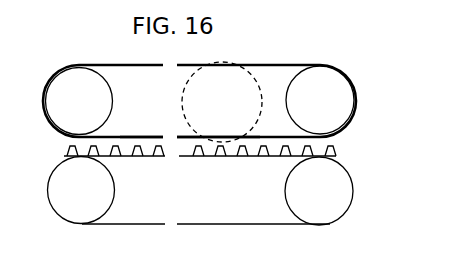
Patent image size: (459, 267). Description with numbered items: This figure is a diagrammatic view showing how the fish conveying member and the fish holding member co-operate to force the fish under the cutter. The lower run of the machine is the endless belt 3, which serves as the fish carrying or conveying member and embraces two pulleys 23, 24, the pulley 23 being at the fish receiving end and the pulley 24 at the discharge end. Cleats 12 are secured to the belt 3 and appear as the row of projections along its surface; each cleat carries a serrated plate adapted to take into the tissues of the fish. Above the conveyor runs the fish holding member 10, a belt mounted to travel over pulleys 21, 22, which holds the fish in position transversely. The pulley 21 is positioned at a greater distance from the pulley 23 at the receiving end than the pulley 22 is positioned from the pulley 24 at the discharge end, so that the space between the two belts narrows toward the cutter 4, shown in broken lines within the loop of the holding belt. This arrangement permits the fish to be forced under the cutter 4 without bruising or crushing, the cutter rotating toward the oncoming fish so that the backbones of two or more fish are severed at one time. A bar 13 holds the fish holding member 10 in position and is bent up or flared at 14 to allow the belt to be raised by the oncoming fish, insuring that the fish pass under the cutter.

The endless belt 3 is at (277, 154).
The cutter 4 is at (222, 102).
The fish holding member 10 is at (283, 63).
The cleats 12 is at (313, 149).
The bar 13 is at (155, 133).
The flared portion 14 is at (232, 133).
The pulley 21 is at (320, 100).
The pulley 22 is at (79, 101).
The pulley 23 is at (319, 191).
The pulley 24 is at (81, 190).